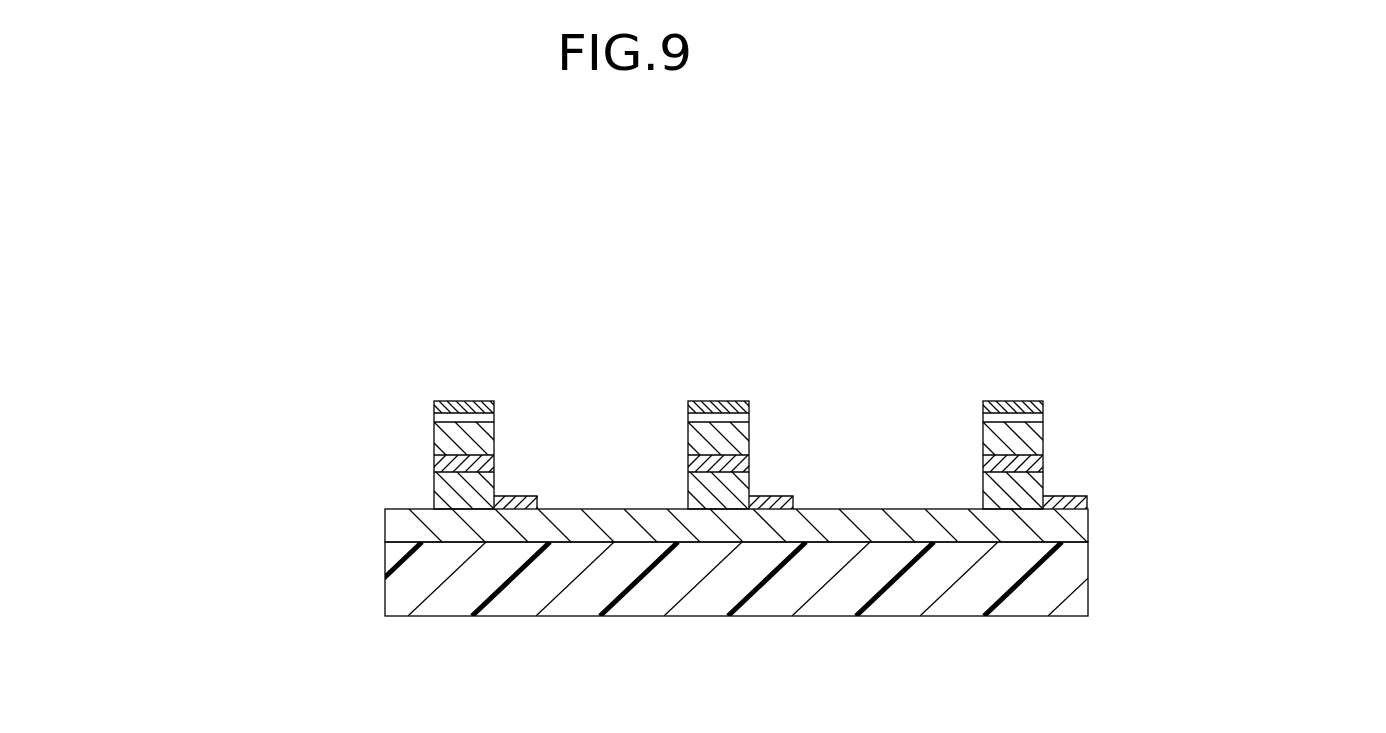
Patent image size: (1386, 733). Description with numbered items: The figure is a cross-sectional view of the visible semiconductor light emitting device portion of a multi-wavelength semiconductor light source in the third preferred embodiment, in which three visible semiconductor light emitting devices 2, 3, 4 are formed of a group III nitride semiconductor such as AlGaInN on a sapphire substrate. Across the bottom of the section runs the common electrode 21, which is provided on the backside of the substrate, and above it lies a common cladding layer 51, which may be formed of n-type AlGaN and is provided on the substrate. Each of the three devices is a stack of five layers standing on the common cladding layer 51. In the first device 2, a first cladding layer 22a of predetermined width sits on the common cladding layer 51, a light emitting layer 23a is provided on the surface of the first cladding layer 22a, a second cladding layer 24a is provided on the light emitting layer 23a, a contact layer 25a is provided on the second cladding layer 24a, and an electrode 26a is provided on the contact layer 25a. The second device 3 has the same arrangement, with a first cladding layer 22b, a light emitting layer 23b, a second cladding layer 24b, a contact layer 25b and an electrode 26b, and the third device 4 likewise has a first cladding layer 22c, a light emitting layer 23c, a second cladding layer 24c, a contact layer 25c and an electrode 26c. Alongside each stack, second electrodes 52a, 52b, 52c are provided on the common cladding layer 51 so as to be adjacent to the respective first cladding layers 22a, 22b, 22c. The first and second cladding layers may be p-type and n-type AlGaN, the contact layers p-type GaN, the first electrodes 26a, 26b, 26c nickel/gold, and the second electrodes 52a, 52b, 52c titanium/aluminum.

The visible semiconductor light emitting device 2 is at (448, 372).
The visible semiconductor light emitting device 3 is at (705, 340).
The visible semiconductor light emitting device 4 is at (1018, 366).
The common electrode 21 is at (404, 596).
The common cladding layer 51 is at (396, 527).
The first cladding layer 22a is at (434, 496).
The light emitting layer 23a is at (434, 463).
The second cladding layer 24a is at (434, 440).
The contact layer 25a is at (434, 418).
The electrode 26a is at (450, 401).
The second electrode 52a is at (512, 496).
The first cladding layer 22b is at (697, 490).
The light emitting layer 23b is at (697, 462).
The second cladding layer 24b is at (697, 440).
The contact layer 25b is at (688, 416).
The electrode 26b is at (735, 401).
The second electrode 52b is at (770, 496).
The first cladding layer 22c is at (990, 492).
The light emitting layer 23c is at (990, 462).
The second cladding layer 24c is at (990, 440).
The contact layer 25c is at (983, 418).
The electrode 26c is at (1030, 401).
The second electrode 52c is at (1058, 496).